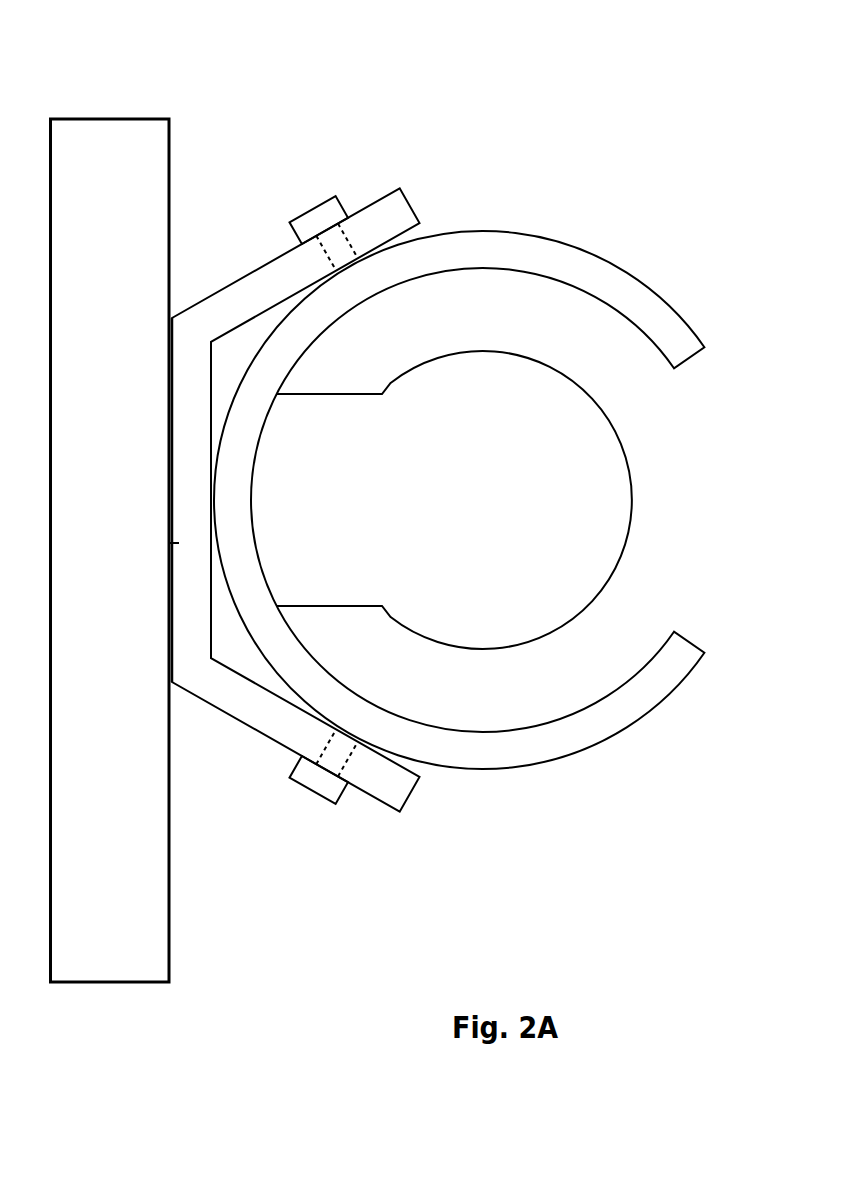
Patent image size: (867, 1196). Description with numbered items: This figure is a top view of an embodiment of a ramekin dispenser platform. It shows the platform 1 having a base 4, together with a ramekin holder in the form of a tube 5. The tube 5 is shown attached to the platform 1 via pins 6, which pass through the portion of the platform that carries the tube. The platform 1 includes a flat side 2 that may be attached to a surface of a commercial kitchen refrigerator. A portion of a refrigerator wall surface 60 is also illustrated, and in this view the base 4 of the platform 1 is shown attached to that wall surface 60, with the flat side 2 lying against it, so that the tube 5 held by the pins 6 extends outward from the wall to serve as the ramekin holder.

The refrigerator wall surface 60 is at (108, 204).
The platform 1 is at (183, 358).
The flat side 2 is at (170, 611).
The base 4 is at (558, 575).
The tube 5 is at (580, 269).
The pins 6 is at (318, 216).